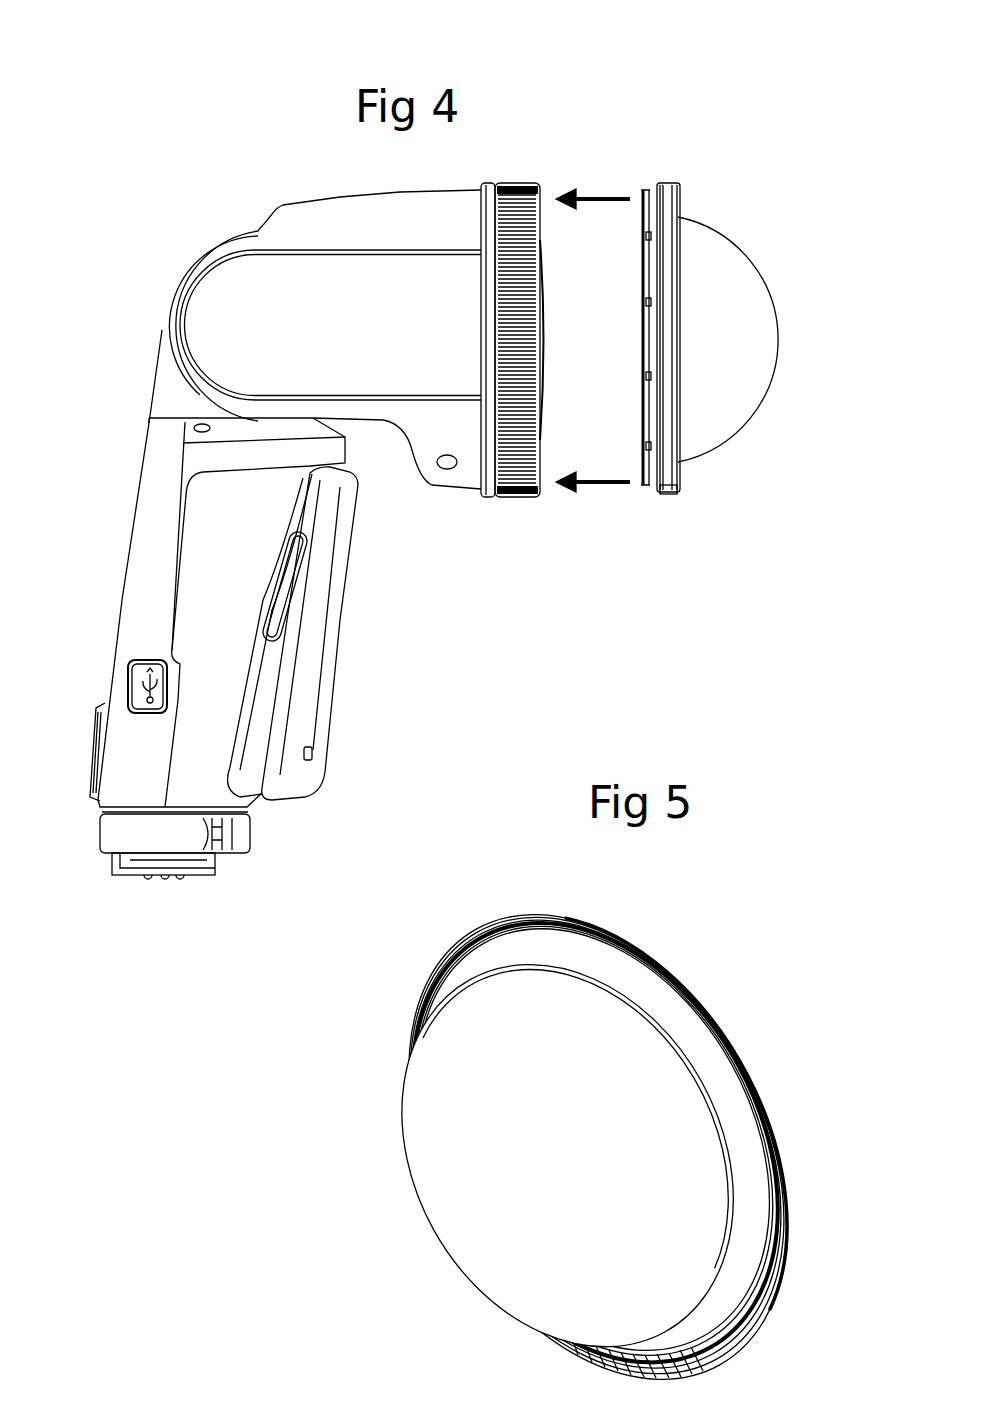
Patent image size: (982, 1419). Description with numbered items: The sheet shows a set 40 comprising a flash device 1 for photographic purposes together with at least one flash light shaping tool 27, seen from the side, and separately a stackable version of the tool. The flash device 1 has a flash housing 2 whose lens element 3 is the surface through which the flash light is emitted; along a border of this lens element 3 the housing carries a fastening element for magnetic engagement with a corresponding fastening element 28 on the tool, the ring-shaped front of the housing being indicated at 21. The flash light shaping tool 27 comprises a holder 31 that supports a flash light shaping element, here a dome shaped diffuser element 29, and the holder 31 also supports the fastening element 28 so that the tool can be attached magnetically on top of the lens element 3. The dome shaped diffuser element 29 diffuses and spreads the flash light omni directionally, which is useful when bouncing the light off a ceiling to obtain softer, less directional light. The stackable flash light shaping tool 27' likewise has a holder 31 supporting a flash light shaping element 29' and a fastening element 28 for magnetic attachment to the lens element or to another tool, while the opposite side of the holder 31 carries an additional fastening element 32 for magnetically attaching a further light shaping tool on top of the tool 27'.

In FIG. 4, the flash device 1 is at (282, 162).
In FIG. 4, the flash housing 2 is at (394, 193).
In FIG. 4, the lens element 3 is at (547, 360).
In FIG. 4, the mounting ring 21 is at (522, 183).
In FIG. 4, the flash light shaping tool 27 is at (707, 355).
In FIG. 4, the fastening element 28 is at (641, 243).
In FIG. 5, the fastening element 28 is at (622, 937).
In FIG. 4, the dome shaped diffuser element 29 is at (762, 339).
In FIG. 4, the holder 31 is at (665, 496).
In FIG. 5, the holder 31 is at (507, 912).
In FIG. 5, the additional fastening element 32 is at (447, 945).
In FIG. 4, the set 40 is at (633, 74).
In FIG. 5, the stackable flash light shaping tool 27' is at (586, 1130).
In FIG. 5, the flash light shaping element 29' is at (553, 1155).